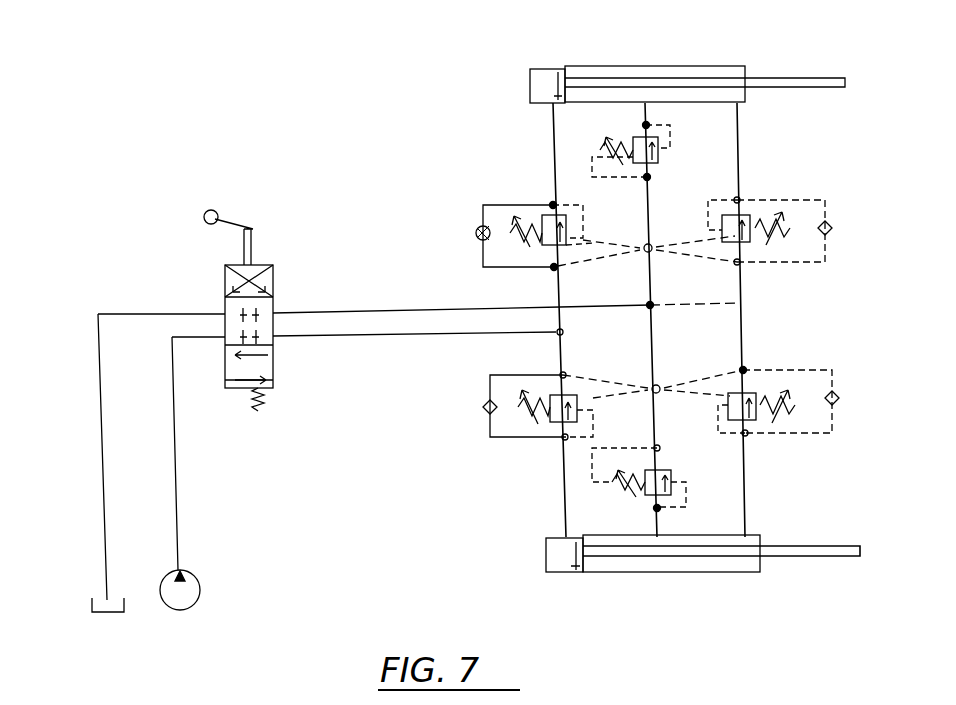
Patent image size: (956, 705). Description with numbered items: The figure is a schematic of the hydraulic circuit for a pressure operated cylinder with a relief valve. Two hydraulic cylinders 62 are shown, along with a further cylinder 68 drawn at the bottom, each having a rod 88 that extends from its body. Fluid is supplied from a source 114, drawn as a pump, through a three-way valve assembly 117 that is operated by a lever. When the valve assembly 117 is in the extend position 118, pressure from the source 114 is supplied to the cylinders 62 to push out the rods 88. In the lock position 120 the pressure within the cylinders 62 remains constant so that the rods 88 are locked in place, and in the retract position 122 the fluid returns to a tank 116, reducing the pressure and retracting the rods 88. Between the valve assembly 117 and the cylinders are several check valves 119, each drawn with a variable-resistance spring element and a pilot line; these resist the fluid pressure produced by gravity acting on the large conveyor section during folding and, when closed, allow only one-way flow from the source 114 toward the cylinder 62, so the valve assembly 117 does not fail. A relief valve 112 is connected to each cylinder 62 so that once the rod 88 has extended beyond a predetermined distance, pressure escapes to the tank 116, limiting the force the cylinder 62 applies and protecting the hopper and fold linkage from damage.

The hydraulic cylinder 62 is at (650, 36).
The hydraulic cylinder 68 is at (646, 573).
The rod 88 is at (842, 76).
The relief valve 112 is at (690, 154).
The source 114 is at (200, 588).
The tank 116 is at (92, 606).
The three-way valve assembly 117 is at (179, 250).
The extend position 118 is at (286, 338).
The check valve 119 is at (534, 188).
The lock position 120 is at (275, 325).
The retract position 122 is at (275, 285).